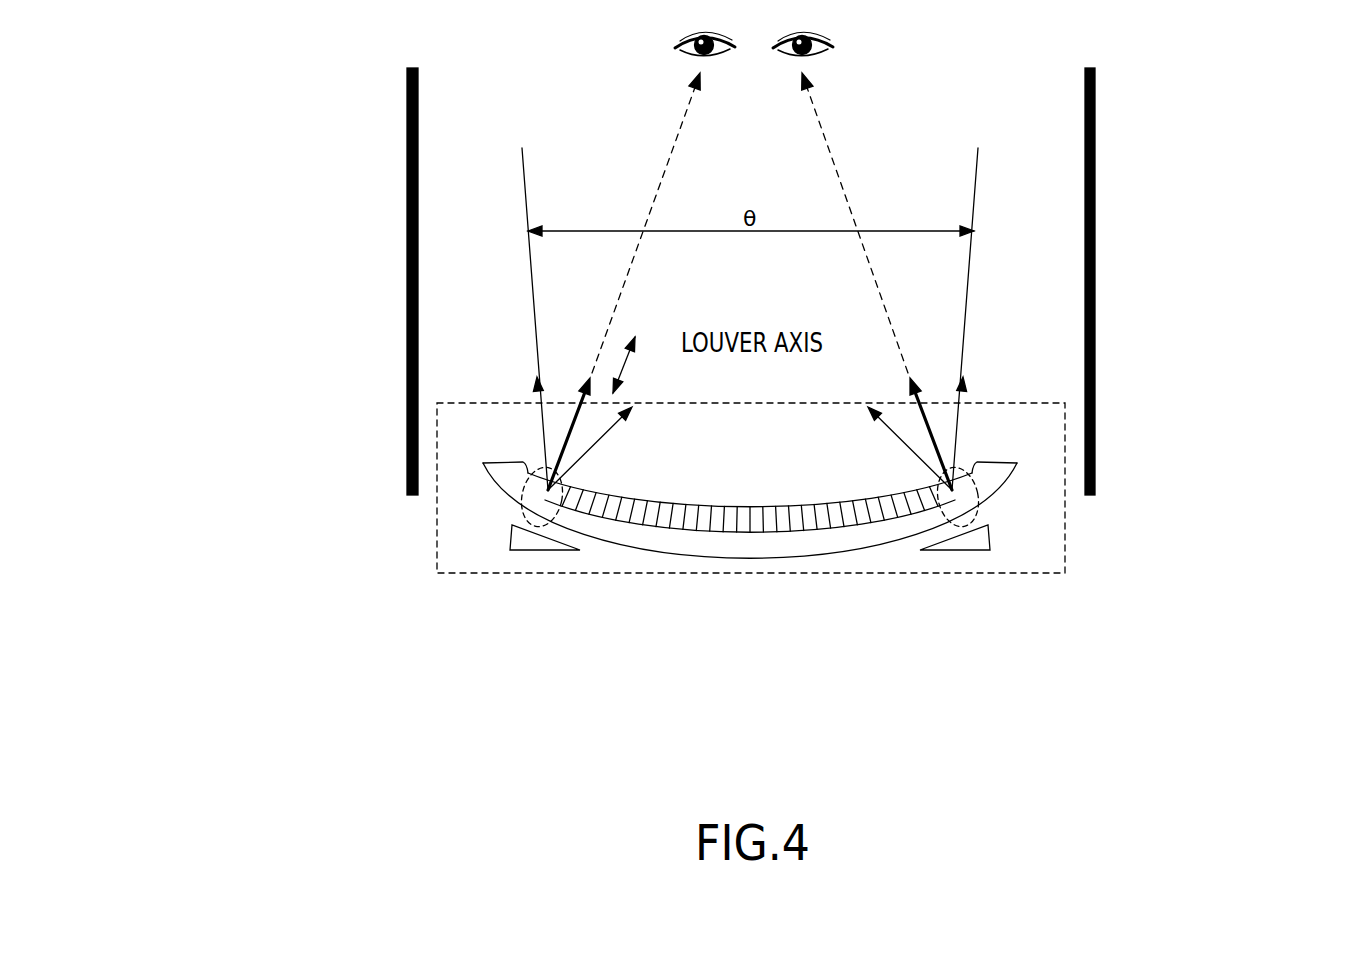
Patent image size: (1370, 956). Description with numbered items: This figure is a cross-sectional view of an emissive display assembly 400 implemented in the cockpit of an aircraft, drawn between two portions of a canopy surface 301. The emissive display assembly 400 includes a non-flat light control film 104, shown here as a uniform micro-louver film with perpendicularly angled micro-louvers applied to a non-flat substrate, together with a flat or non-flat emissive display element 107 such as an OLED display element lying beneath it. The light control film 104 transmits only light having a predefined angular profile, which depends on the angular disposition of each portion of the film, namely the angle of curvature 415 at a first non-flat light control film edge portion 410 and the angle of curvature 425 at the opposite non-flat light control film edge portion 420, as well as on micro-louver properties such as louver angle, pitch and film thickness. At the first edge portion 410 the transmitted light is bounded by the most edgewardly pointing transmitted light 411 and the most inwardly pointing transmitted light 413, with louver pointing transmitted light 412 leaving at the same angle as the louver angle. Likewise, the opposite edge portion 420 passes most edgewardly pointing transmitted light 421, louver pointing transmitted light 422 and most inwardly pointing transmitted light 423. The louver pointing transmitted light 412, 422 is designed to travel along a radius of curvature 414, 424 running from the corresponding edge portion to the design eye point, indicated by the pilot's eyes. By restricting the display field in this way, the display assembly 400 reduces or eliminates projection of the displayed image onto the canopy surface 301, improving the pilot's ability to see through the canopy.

The non-flat light control film 104 is at (515, 458).
The emissive display element 107 is at (750, 555).
The canopy surface 301 is at (1097, 312).
The emissive display assembly 400 is at (1065, 528).
The first non-flat light control film edge portion 410 is at (523, 513).
The most edgewardly pointing transmitted light 411 is at (537, 420).
The louver pointing transmitted light 412 is at (574, 420).
The most inwardly pointing transmitted light 413 is at (580, 460).
The radius of curvature 414 is at (668, 160).
The angle of curvature 415 is at (527, 545).
The opposite non-flat light control film edge portion 420 is at (977, 513).
The most edgewardly pointing transmitted light 421 is at (963, 420).
The louver pointing transmitted light 422 is at (928, 420).
The most inwardly pointing transmitted light 423 is at (920, 460).
The radius of curvature 424 is at (833, 160).
The angle of curvature 425 is at (975, 545).